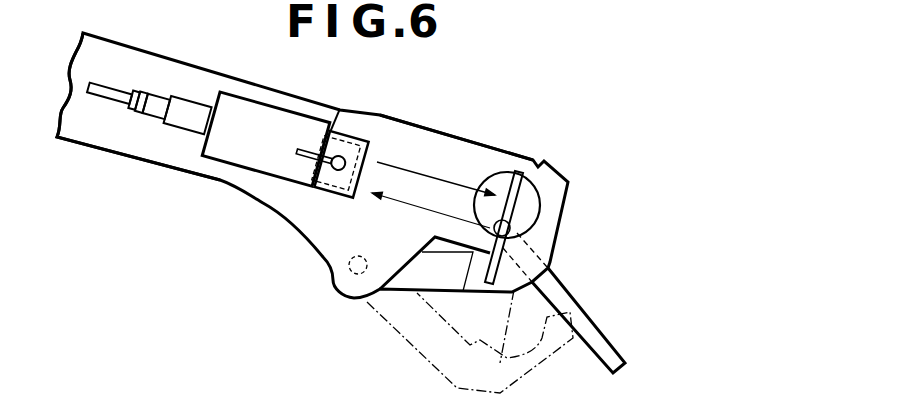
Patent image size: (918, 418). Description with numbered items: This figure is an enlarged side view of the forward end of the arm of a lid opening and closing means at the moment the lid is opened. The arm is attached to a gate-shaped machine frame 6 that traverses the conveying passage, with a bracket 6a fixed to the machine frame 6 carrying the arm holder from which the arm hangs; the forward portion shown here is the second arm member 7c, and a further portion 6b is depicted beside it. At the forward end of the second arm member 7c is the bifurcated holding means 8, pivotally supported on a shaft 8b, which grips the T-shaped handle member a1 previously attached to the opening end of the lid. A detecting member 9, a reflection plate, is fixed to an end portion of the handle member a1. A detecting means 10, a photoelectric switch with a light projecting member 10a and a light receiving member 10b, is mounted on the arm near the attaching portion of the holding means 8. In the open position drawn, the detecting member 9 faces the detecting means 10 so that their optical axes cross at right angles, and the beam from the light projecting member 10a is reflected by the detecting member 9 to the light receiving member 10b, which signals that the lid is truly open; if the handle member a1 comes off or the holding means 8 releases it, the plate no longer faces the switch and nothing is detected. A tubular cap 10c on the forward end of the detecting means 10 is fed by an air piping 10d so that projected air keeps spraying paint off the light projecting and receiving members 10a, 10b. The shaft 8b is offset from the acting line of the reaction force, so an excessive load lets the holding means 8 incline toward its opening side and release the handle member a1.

The machine frame 6 is at (483, 142).
The bracket 6a is at (497, 157).
The lower engaging portion of lock lever 6b is at (517, 288).
The second arm member 7c is at (170, 168).
The holding means 8 is at (513, 226).
The shaft 8b is at (353, 275).
The detecting member 9 is at (518, 203).
The detecting means 10 is at (296, 109).
The light projecting member 10a is at (339, 112).
The light receiving member 10b is at (318, 190).
The tubular cap 10c is at (358, 140).
The air piping 10d is at (340, 172).
The handle member a1 is at (600, 343).